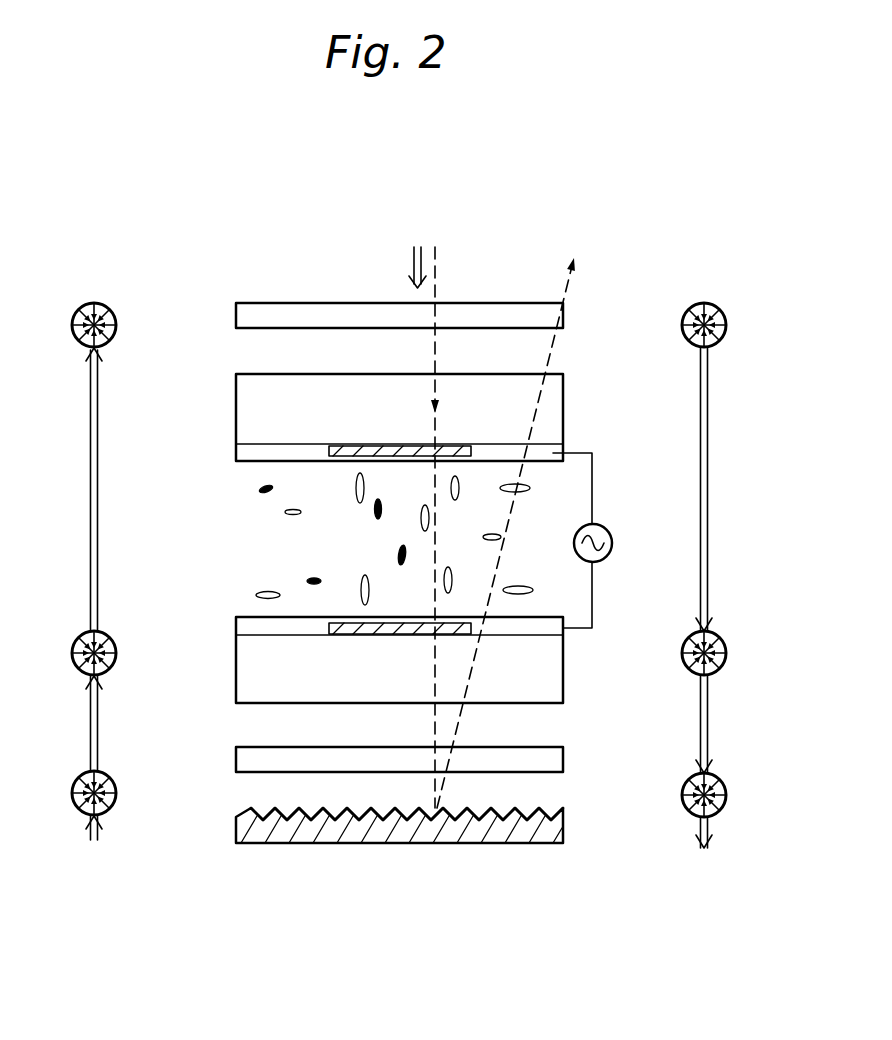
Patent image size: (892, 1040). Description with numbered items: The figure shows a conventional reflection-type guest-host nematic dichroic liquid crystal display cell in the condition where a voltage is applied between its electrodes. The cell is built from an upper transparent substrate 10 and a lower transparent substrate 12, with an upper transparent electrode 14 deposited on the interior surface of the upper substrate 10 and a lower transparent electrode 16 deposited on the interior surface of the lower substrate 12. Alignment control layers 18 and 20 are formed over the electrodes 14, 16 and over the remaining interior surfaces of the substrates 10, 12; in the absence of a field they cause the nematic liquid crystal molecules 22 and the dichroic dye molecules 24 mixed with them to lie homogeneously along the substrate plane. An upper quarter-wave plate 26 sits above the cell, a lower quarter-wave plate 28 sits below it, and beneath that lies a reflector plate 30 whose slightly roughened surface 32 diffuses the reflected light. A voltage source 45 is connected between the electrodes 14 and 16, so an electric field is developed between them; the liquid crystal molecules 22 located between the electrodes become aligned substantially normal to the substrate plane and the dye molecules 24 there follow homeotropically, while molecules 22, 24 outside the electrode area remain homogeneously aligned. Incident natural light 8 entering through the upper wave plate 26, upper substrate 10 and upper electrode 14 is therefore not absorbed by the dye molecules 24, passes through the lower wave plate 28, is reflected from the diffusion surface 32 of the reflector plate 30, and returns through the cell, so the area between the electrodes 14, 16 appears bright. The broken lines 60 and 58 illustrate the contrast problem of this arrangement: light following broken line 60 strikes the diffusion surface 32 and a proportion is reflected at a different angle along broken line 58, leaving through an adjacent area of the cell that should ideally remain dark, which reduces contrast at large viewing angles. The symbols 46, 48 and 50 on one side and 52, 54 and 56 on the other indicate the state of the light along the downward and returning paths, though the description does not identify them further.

The incident natural light 8 is at (417, 252).
The upper transparent substrate 10 is at (236, 406).
The lower transparent substrate 12 is at (236, 684).
The upper transparent electrode 14 is at (345, 452).
The lower transparent electrode 16 is at (330, 622).
The upper alignment control layer 18 is at (236, 454).
The lower alignment control layer 20 is at (236, 627).
The nematic liquid crystal molecules 22 is at (268, 591).
The dichroic dye molecules 24 is at (262, 492).
The upper quarter-wave phase delay plate 26 is at (236, 316).
The lower quarter-wave phase delay plate 28 is at (236, 765).
The reflector plate 30 is at (376, 832).
The roughened diffusion surface 32 is at (530, 813).
The voltage source 45 is at (613, 537).
The polarization state of incident light 46 is at (727, 322).
The polarization state after first pass 48 is at (727, 650).
The polarization state at reflector 50 is at (727, 792).
The polarization state of reflected light 52 is at (81, 776).
The polarization state after second pass 54 is at (81, 636).
The polarization state of exiting light 56 is at (82, 305).
The broken line (diffusely reflected light path) 58 is at (552, 342).
The broken line (incident light path) 60 is at (437, 340).